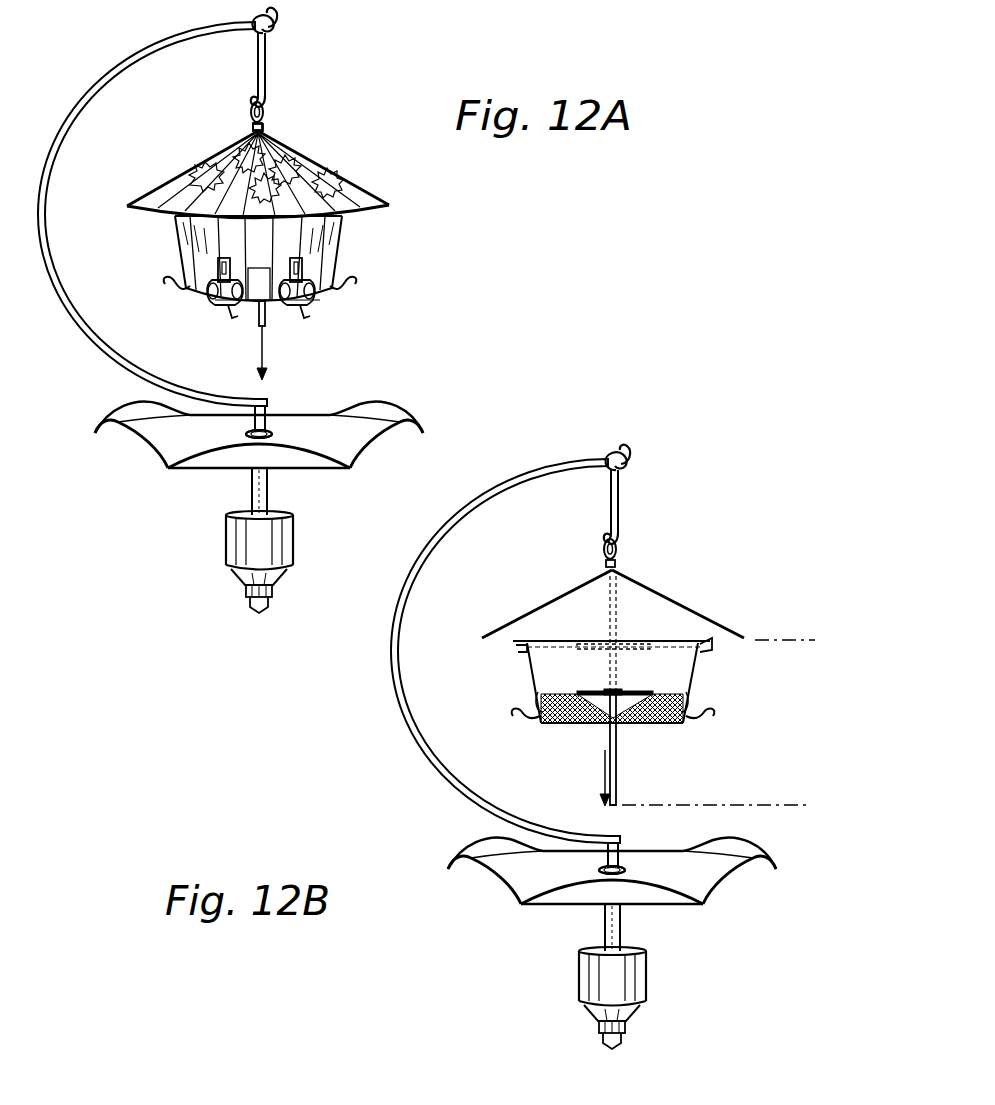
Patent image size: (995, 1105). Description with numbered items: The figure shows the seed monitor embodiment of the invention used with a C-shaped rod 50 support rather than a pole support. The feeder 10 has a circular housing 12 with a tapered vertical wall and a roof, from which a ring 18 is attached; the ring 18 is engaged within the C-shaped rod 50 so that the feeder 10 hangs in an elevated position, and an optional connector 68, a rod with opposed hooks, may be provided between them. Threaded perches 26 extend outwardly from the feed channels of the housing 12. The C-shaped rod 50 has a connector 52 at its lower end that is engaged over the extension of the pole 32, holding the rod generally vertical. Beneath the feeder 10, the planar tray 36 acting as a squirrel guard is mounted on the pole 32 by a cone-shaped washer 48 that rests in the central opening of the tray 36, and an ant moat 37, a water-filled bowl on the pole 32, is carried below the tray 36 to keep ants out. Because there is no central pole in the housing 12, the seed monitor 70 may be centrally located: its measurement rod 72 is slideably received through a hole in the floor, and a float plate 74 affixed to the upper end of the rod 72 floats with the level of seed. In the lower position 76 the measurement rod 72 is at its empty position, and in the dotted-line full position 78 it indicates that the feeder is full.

In FIG. 12A, the feeder 10 is at (392, 123).
In FIG. 12A, the circular housing 12 is at (258, 221).
In FIG. 12A, the ring 18 is at (266, 120).
In FIG. 12B, the threaded perch 26 is at (700, 711).
In FIG. 12A, the pole 32 is at (272, 498).
In FIG. 12B, the pole 32 is at (627, 1034).
In FIG. 12A, the planar tray 36 is at (337, 430).
In FIG. 12B, the planar tray 36 is at (517, 863).
In FIG. 12B, the ant moat 37 is at (649, 975).
In FIG. 12A, the cone-shaped washer 48 is at (270, 430).
In FIG. 12B, the cone-shaped washer 48 is at (550, 892).
In FIG. 12A, the C-shaped rod 50 is at (80, 105).
In FIG. 12B, the C-shaped rod 50 is at (490, 480).
In FIG. 12A, the connector 52 is at (285, 400).
In FIG. 12A, the connector 68 is at (266, 63).
In FIG. 12B, the seed monitor 70 is at (643, 689).
In FIG. 12B, the measurement rod 72 is at (618, 735).
In FIG. 12B, the float plate 74 is at (585, 691).
In FIG. 12B, the lower position 76 is at (737, 805).
In FIG. 12B, the full position 78 is at (806, 640).